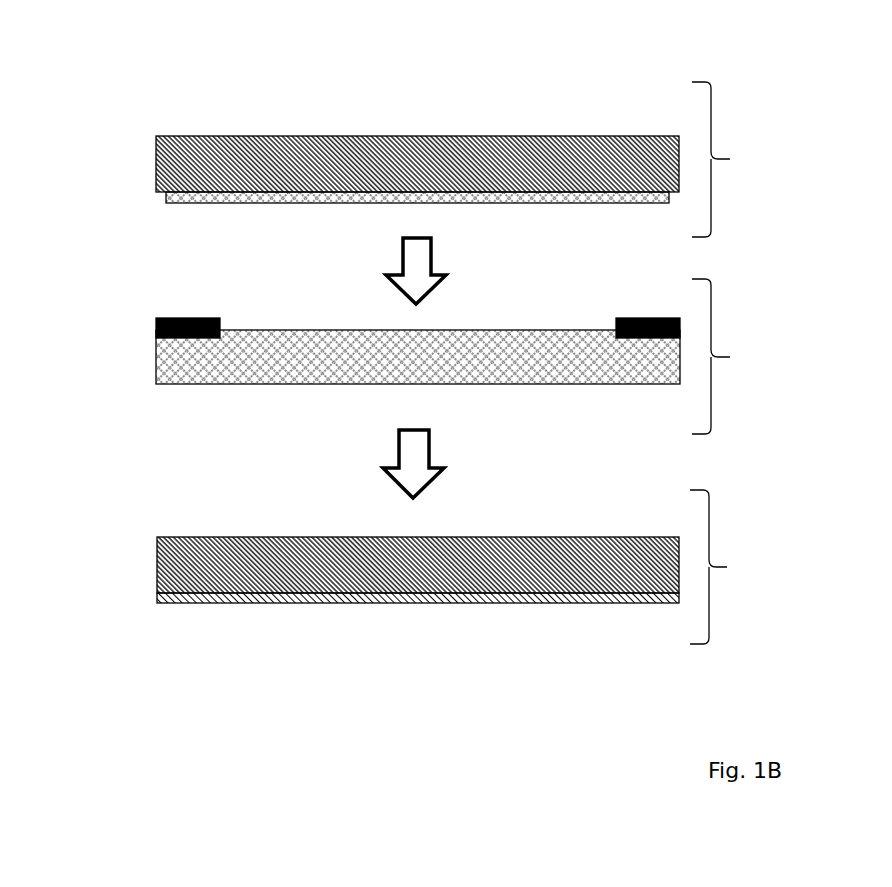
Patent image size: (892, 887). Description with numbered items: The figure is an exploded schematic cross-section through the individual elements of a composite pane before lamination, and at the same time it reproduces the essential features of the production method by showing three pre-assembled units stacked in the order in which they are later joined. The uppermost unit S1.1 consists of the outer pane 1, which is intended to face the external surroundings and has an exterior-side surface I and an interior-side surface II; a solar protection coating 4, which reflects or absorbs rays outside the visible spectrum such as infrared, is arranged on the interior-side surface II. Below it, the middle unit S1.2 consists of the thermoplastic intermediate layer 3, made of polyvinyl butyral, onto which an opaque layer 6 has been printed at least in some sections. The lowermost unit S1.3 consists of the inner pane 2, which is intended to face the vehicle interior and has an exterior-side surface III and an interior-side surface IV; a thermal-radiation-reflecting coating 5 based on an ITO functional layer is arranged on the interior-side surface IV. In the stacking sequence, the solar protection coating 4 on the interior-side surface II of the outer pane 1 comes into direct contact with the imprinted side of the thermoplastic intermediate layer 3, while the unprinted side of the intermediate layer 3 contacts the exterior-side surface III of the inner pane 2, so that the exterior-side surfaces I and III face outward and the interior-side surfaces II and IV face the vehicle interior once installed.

The outer pane 1 is at (187, 167).
The inner pane 2 is at (178, 560).
The thermoplastic intermediate layer 3 is at (172, 362).
The solar protection coating 4 is at (347, 197).
The thermal-radiation-reflecting coating 5 is at (628, 596).
The opaque layer 6 is at (185, 318).
The exterior-side surface I is at (476, 134).
The interior-side surface II is at (583, 190).
The exterior-side surface III is at (360, 538).
The interior-side surface IV is at (438, 595).
The unit S1.1 is at (740, 159).
The unit S1.2 is at (740, 356).
The unit S1.3 is at (738, 567).